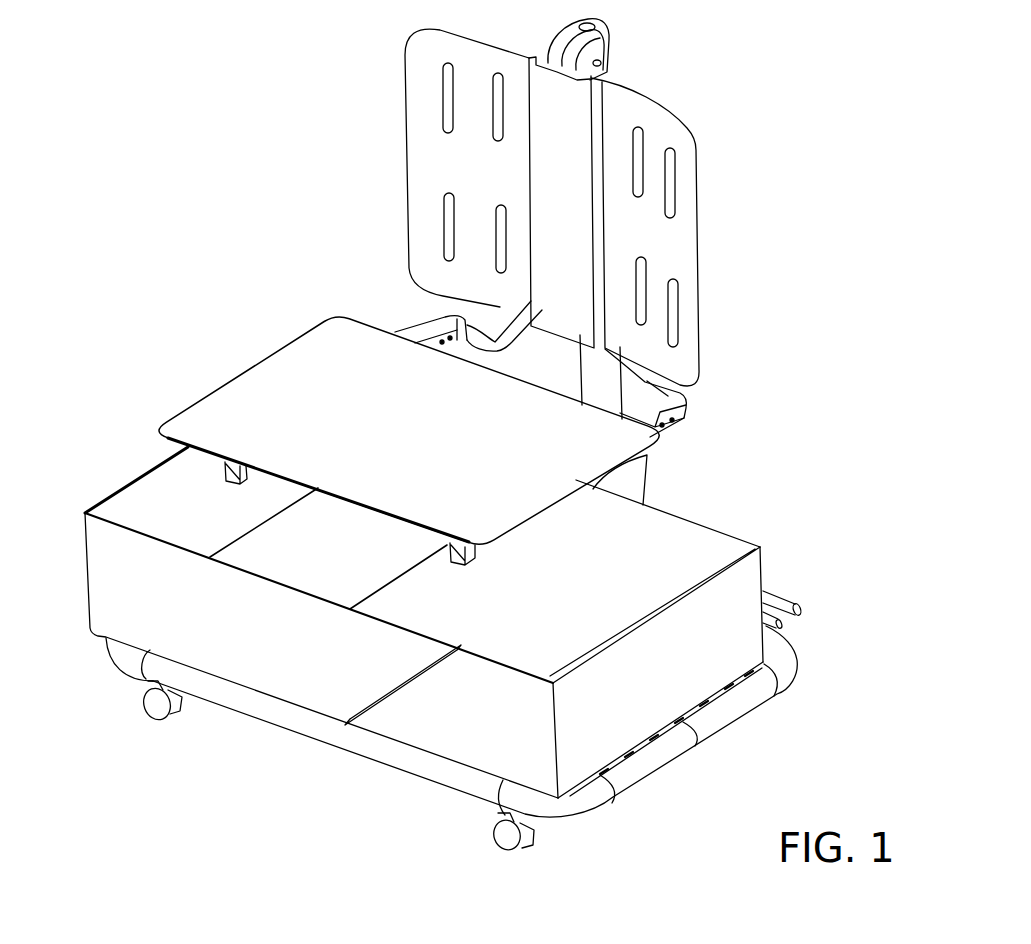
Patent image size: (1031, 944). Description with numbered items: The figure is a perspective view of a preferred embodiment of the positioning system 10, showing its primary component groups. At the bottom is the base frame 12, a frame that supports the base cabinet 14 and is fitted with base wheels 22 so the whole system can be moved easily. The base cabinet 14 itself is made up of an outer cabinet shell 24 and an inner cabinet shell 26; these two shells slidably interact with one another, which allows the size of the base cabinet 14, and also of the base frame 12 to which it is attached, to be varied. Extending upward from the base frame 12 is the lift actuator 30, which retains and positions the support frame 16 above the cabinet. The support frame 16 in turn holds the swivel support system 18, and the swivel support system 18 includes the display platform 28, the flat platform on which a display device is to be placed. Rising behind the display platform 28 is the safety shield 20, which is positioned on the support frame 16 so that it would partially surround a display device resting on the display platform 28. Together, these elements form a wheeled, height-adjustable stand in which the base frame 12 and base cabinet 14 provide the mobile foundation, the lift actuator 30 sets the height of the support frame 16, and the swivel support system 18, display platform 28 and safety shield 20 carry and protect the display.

The positioning system 10 is at (740, 286).
The base frame 12 is at (757, 702).
The base cabinet 14 is at (750, 573).
The support frame 16 is at (675, 405).
The swivel support system 18 is at (214, 368).
The safety shield 20 is at (683, 191).
The base wheels 22 is at (160, 712).
The outer cabinet shell 24 is at (577, 603).
The inner cabinet shell 26 is at (266, 645).
The display platform 28 is at (416, 459).
The lift actuator 30 is at (633, 492).